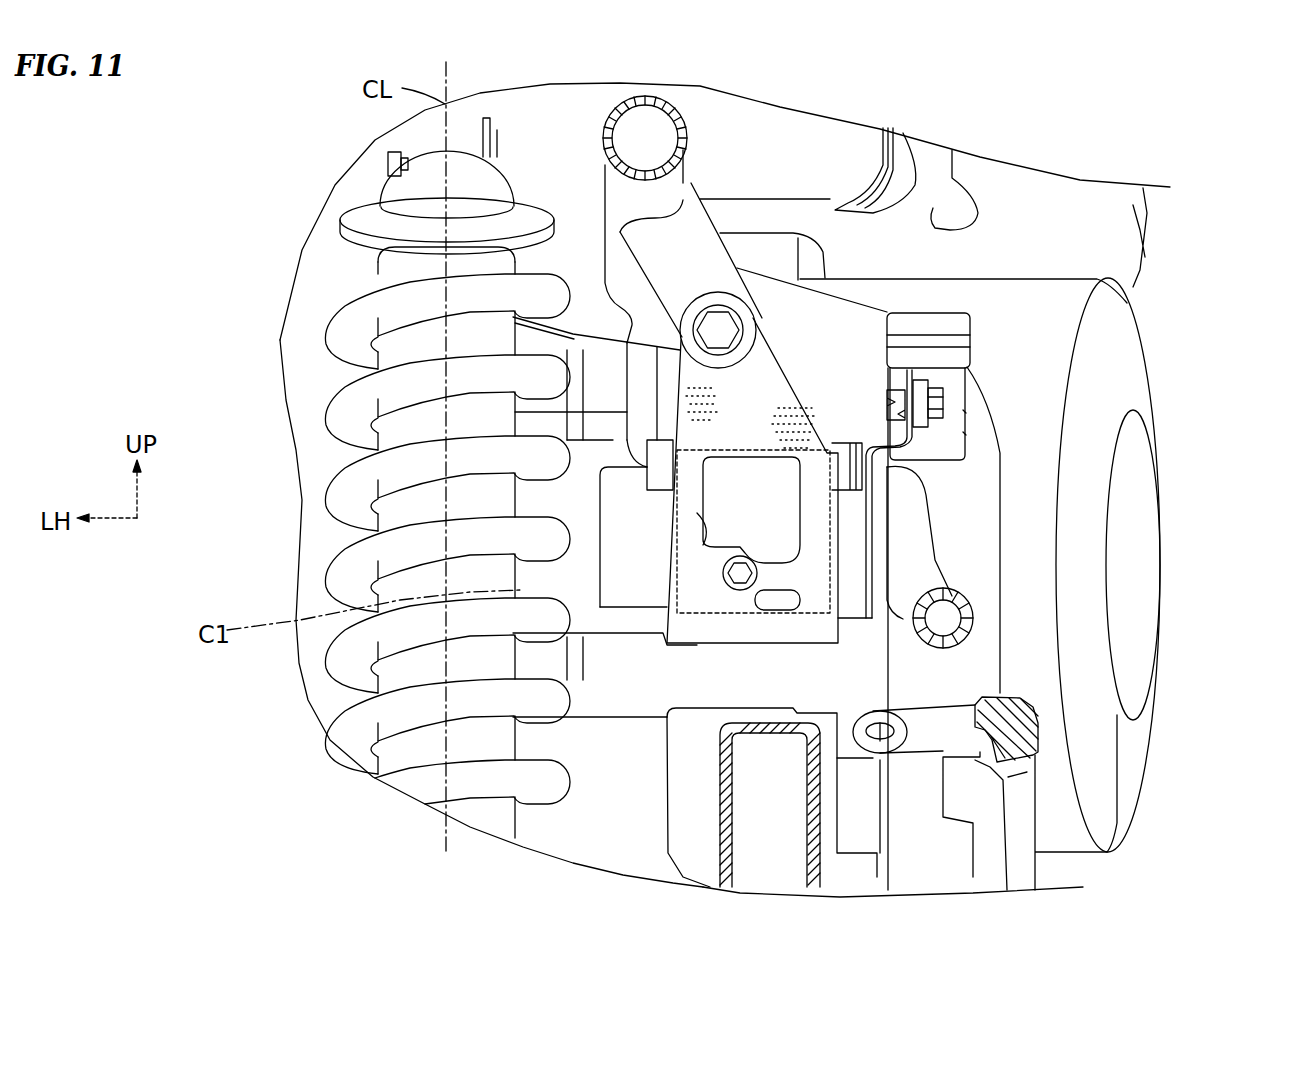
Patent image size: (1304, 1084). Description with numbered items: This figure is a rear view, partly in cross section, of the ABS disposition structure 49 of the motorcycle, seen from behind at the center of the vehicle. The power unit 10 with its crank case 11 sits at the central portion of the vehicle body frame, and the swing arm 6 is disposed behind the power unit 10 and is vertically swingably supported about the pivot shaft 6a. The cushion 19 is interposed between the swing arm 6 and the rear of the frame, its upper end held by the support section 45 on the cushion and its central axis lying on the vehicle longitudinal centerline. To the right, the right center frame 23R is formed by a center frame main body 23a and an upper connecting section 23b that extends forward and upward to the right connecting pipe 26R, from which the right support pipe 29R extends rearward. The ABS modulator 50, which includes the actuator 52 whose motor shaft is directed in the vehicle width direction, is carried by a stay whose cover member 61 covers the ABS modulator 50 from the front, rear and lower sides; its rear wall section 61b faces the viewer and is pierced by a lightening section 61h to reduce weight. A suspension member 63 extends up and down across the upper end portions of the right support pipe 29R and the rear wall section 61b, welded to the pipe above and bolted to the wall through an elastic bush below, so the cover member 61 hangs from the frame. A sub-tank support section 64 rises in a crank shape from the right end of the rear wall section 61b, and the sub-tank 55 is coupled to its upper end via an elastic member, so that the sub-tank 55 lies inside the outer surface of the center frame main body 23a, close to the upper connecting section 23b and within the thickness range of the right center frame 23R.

The swing arm 6 is at (705, 860).
The pivot shaft 6a is at (543, 827).
The power unit 10 is at (1133, 631).
The crank case 11 is at (1120, 775).
The rear suspension (cushion) 19 is at (385, 360).
The right center frame 23R is at (1005, 558).
The center frame main body 23a is at (993, 618).
The upper connecting section 23b is at (850, 317).
The right connecting pipe 26R is at (770, 293).
The right support pipe 29R is at (688, 142).
The support section on the cushion 45 is at (390, 167).
The ABS disposition structure 49 is at (1135, 127).
The ABS modulator 50 is at (598, 577).
The actuator 52 is at (613, 507).
The sub-tank 55 is at (947, 318).
The cover member 61 is at (596, 689).
The rear wall section 61b is at (703, 595).
The lightening section 61h is at (700, 547).
The suspension member 63 is at (705, 232).
The sub-tank support section 64 is at (935, 443).